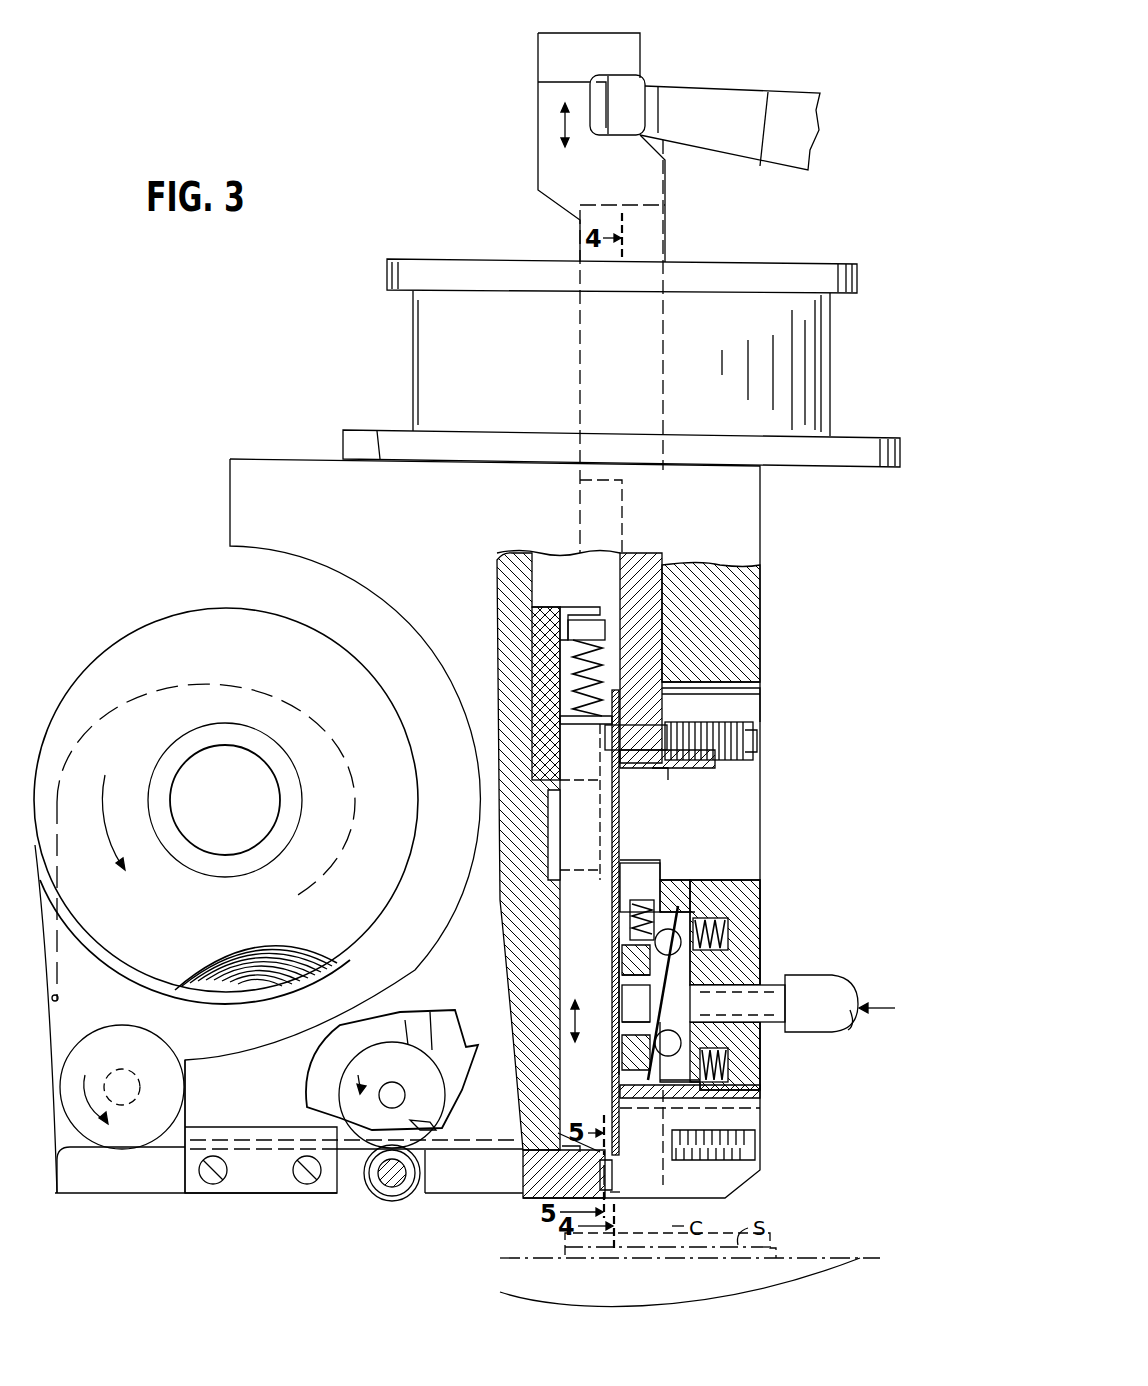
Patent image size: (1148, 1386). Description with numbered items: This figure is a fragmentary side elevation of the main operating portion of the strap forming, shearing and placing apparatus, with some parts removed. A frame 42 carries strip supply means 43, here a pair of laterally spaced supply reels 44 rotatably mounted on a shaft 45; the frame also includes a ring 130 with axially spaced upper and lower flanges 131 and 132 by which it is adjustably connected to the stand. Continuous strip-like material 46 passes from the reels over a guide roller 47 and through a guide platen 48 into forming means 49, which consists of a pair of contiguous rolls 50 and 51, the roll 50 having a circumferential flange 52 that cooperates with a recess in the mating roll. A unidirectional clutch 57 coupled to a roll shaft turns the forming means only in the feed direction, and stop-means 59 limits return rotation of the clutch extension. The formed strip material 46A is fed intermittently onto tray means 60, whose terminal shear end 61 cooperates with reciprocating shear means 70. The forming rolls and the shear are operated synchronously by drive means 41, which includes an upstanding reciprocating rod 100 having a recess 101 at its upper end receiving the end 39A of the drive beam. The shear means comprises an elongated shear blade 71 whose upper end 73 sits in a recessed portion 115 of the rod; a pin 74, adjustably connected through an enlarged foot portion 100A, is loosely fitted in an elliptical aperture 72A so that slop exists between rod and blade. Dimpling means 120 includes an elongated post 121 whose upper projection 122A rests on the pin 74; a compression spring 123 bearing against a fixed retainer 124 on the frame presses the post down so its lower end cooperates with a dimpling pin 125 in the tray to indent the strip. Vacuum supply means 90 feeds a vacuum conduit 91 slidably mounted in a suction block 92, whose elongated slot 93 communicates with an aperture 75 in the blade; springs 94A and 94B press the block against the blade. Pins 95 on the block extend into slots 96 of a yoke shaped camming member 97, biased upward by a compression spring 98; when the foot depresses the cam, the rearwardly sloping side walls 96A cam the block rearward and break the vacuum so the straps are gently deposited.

The drive means 41 is at (751, 80).
The end of beam 39A is at (635, 96).
The recess 101 is at (605, 80).
The reciprocating rod 100 is at (583, 228).
The upper flange 131 is at (386, 276).
The ring 130 is at (413, 393).
The lower flange 132 is at (341, 445).
The recessed portion 115 is at (583, 528).
The compression spring 123 is at (562, 620).
The fixed retainer 124 is at (597, 625).
The projection 122A is at (510, 702).
The frame 42 is at (510, 722).
The dimpling means 120 is at (545, 955).
The elongated post 121 is at (522, 1040).
The elliptical aperture 72A is at (662, 706).
The enlarged foot portion 100A is at (708, 722).
The upper end of blade 73 is at (604, 733).
The pin 74 is at (656, 770).
The shear blade 71 is at (620, 803).
The shear means 70 is at (636, 838).
The yoke shaped camming member 97 is at (630, 860).
The compression spring 98 is at (642, 898).
The rearwardly sloping side walls 96A is at (688, 905).
The slots 96 is at (664, 956).
The spring 94A is at (740, 925).
The spring 94B is at (740, 1060).
The vacuum conduit 91 is at (770, 985).
The vacuum supply means 90 is at (846, 971).
The pins 95 is at (625, 950).
The suction block 92 is at (630, 972).
The elongated slot 93 is at (628, 1000).
The aperture 75 is at (568, 1010).
The terminal shear end 61 is at (618, 1160).
The dimpling pin 125 is at (632, 1210).
The strip supply means 43 is at (152, 606).
The supply reels 44 is at (118, 645).
The shaft 45 is at (170, 785).
The strip-like material 46 is at (58, 998).
The formed strip material 46A is at (490, 1145).
The guide roller 47 is at (182, 1096).
The guide platen 48 is at (272, 1162).
The tray means 60 is at (476, 1204).
The flange 52 is at (376, 1196).
The roll 50 is at (405, 1190).
The unidirectional clutch 57 is at (440, 1088).
The stop-means 59 is at (455, 1020).
The forming means 49 is at (314, 1045).
The roll 51 is at (432, 1128).